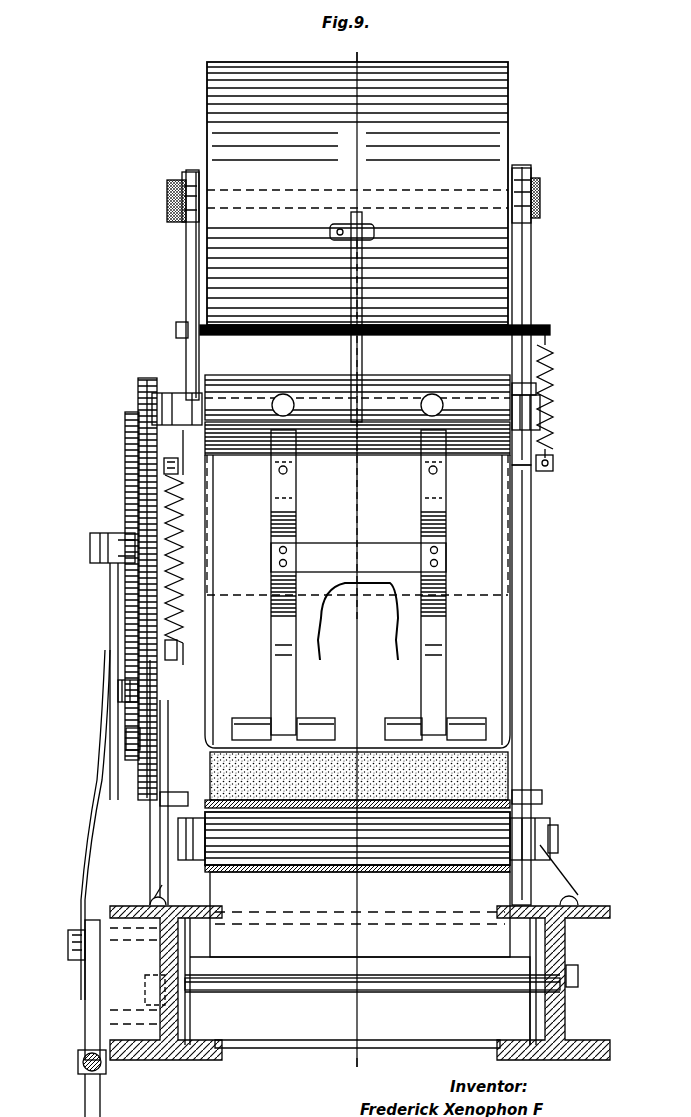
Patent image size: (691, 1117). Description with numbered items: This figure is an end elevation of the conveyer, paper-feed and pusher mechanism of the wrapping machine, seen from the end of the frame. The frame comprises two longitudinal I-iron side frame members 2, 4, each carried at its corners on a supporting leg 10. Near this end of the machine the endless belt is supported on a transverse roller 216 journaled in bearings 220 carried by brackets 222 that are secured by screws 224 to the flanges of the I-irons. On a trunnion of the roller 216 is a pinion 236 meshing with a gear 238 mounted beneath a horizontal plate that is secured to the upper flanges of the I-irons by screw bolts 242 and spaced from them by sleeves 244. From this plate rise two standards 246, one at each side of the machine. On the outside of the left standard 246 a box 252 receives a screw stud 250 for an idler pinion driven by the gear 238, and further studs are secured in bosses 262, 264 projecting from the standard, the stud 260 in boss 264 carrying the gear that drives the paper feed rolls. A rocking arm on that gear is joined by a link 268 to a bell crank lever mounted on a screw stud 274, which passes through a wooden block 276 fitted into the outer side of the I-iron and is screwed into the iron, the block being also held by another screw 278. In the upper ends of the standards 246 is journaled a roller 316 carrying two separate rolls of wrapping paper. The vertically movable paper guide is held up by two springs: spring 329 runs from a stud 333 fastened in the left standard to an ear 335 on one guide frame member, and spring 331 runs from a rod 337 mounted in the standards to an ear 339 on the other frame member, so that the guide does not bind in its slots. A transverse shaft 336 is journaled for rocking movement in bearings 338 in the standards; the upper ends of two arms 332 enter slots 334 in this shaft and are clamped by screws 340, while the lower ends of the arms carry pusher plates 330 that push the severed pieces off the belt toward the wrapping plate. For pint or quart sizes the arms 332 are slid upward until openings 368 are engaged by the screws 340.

The supporting leg 10 is at (349, 564).
The side frame member 2 is at (165, 1060).
The side frame member 4 is at (560, 1025).
The roller 316 is at (483, 190).
The standard 246 is at (190, 268).
The rod 337 is at (412, 330).
The bearing 338 is at (182, 395).
The slot 334 is at (268, 420).
The clamping screw 340 is at (287, 394).
The spring 331 is at (567, 391).
The shaft 336 is at (535, 388).
The ear 339 is at (552, 463).
The opening 368 is at (278, 471).
The arm 332 is at (278, 583).
The stud 333 is at (168, 470).
The spring 329 is at (165, 500).
The boss 264 is at (160, 520).
The stud 260 is at (92, 562).
The boss 262 is at (140, 672).
The ear 335 is at (180, 650).
The box 252 is at (180, 745).
The pusher plate 330 is at (316, 725).
The screw stud 250 is at (130, 733).
The link 268 is at (104, 763).
The screw bolt 242 is at (170, 795).
The gear 238 is at (148, 800).
The bearing 220 is at (140, 835).
The pinion 236 is at (115, 855).
The bracket 222 is at (155, 895).
The screw 224 is at (150, 900).
The screw stud 274 is at (75, 928).
The sleeve 244 is at (205, 887).
The roller 216 is at (422, 838).
The wooden block 276 is at (115, 983).
The screw 278 is at (128, 1022).